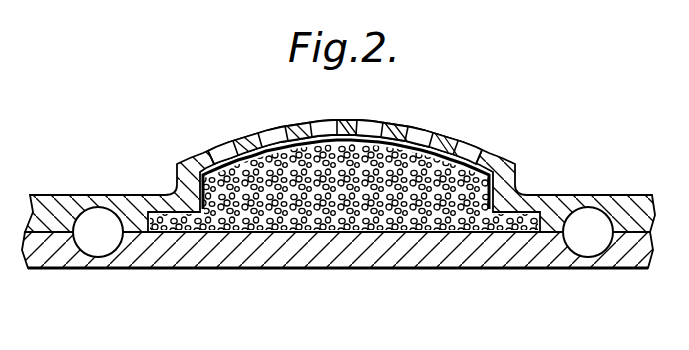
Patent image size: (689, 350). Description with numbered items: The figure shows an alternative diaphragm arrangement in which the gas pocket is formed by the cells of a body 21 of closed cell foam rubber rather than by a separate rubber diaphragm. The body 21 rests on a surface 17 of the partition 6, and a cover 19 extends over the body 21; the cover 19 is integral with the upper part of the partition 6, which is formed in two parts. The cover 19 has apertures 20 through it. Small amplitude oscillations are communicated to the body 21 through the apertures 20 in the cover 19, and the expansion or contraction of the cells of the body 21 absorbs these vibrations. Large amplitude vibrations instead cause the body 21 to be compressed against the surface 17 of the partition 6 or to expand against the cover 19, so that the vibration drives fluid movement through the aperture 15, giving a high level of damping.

The partition 6 is at (371, 113).
The aperture 15 is at (100, 218).
The surface of the partition 17 is at (332, 233).
The cover 19 is at (446, 136).
The apertures 20 is at (371, 122).
The body of closed cell foam rubber 21 is at (447, 232).